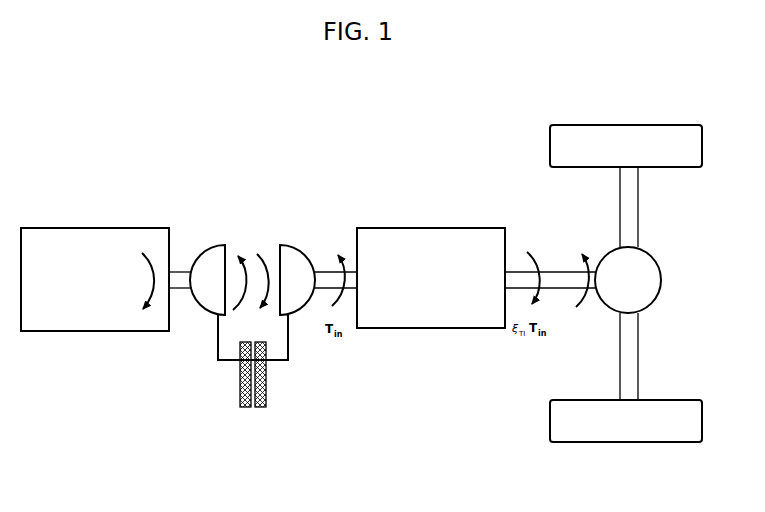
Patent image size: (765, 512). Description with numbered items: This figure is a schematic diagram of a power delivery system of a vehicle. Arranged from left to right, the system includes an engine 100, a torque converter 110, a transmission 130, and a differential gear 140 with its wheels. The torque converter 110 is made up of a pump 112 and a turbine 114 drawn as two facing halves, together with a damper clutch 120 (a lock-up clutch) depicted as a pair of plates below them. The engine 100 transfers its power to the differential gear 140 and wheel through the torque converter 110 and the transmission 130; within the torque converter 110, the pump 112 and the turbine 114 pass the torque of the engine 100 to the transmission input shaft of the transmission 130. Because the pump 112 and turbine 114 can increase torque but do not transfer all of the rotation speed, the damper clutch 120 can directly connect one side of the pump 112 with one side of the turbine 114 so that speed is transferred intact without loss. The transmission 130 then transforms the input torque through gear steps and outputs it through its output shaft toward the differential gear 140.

The engine 100 is at (88, 228).
The torque converter 110 is at (252, 232).
The pump 112 is at (218, 245).
The turbine 114 is at (292, 243).
The damper clutch 120 is at (253, 408).
The transmission 130 is at (432, 329).
The differential gear 140 is at (663, 262).